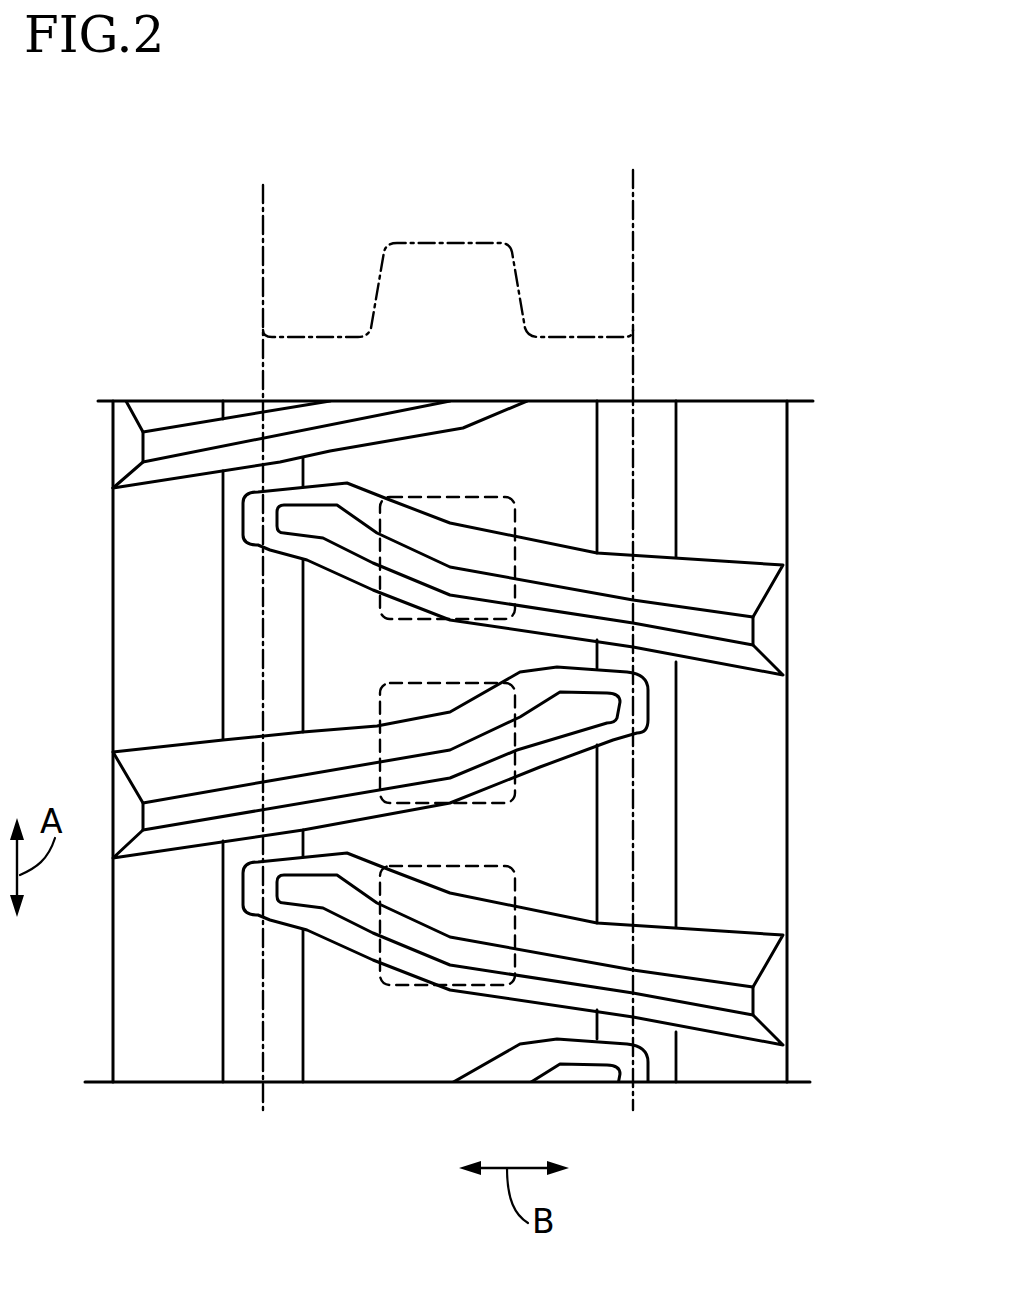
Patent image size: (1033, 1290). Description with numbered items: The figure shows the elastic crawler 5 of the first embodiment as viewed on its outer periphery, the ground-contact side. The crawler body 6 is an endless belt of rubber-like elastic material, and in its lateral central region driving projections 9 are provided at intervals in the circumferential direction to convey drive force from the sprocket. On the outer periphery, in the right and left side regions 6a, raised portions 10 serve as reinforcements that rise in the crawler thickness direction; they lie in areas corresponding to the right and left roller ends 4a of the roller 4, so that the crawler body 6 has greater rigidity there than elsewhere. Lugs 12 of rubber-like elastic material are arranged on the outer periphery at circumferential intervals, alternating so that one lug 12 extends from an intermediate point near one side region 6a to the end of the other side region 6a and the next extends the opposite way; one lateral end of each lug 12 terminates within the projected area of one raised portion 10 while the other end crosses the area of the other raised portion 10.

The roller 4 is at (633, 195).
The roller ends 4a is at (262, 248).
The elastic crawler 5 is at (796, 449).
The crawler body 6 is at (387, 1085).
The side regions 6a is at (733, 1092).
The driving projections 9 is at (510, 498).
The raised portions 10 is at (217, 548).
The lugs 12 is at (723, 560).